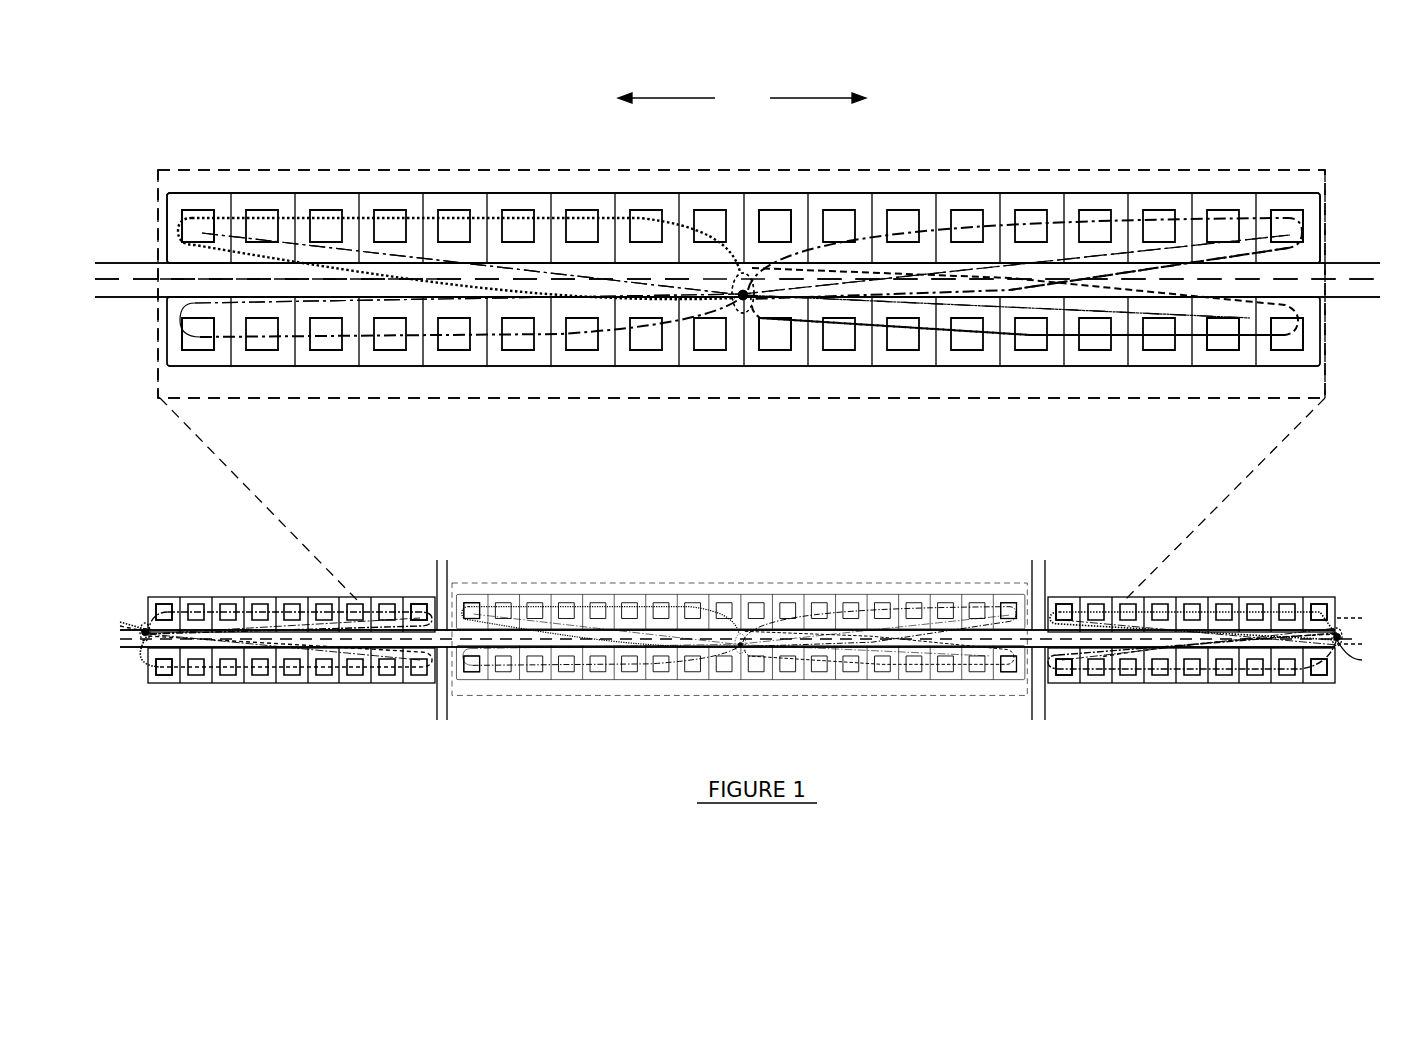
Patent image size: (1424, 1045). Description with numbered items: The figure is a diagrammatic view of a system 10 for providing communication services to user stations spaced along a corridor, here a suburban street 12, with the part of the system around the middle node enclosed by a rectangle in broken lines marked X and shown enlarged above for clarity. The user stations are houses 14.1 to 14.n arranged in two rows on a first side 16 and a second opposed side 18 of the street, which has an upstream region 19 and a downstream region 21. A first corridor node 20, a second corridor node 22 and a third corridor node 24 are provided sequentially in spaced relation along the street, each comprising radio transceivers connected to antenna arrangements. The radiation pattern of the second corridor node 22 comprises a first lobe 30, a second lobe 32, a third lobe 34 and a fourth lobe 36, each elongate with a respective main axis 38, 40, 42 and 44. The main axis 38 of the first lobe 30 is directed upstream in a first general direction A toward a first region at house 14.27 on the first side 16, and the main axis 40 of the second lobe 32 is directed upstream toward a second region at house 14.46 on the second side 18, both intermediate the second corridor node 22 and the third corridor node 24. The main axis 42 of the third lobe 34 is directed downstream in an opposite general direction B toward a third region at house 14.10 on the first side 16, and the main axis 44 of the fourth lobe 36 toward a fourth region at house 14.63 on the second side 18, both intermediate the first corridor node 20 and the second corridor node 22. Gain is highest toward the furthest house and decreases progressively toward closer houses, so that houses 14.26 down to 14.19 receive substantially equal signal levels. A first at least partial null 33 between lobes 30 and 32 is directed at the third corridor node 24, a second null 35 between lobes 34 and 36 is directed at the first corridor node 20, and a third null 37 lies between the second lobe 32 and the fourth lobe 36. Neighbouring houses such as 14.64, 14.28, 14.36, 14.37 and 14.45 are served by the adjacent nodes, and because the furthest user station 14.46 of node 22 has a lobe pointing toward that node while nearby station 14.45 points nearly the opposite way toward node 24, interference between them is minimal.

The system 10 is at (1316, 546).
The suburban street 12 is at (148, 268).
The house 14.1 is at (165, 677).
The third region 14.10 is at (199, 350).
The house 14.19 is at (774, 350).
The house 14.26 is at (1223, 350).
The first region 14.27 is at (1305, 331).
The house 14.28 is at (1065, 677).
The house 14.36 is at (1318, 677).
The house 14.37 is at (1320, 603).
The furthest user station serviced by corridor node 24 14.45 is at (1062, 603).
The second region 14.46 is at (1285, 217).
The fourth region 14.63 is at (193, 208).
The house 14.64 is at (420, 603).
The house 14.n is at (161, 602).
The first side 16 is at (104, 338).
The second opposed side 18 is at (104, 245).
The upstream region 19 is at (1387, 292).
The first corridor node 20 is at (136, 622).
The downstream region 21 is at (72, 292).
The second corridor node 22 is at (733, 308).
The third corridor node 24 is at (1348, 628).
The first lobe 30 is at (1186, 330).
The second lobe 32 is at (1200, 227).
The first at least partial null 33 is at (1185, 273).
The third lobe 34 is at (430, 327).
The second at least partial null 35 is at (275, 278).
The fourth lobe 36 is at (478, 235).
The third at least partial null 37 is at (772, 200).
The main axis of first lobe 38 is at (1075, 310).
The main axis of second lobe 40 is at (1117, 250).
The main axis of third lobe 42 is at (353, 313).
The main axis of fourth lobe 44 is at (418, 258).
The first general direction A is at (818, 71).
The opposite general direction B is at (666, 71).
The rectangle in broken lines X is at (905, 165).